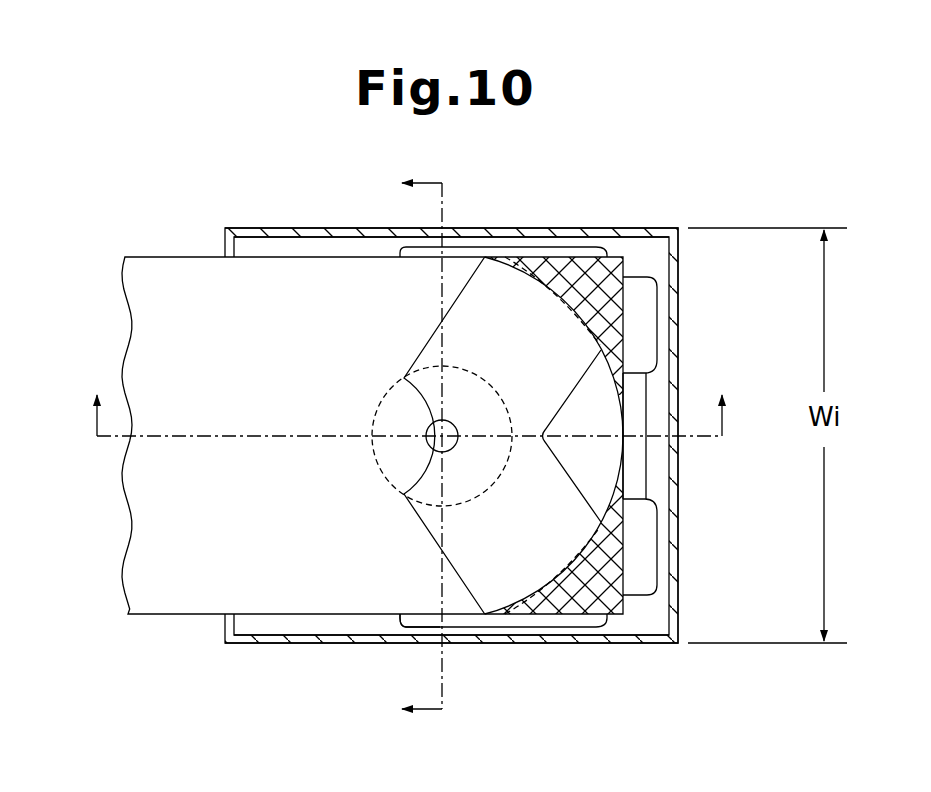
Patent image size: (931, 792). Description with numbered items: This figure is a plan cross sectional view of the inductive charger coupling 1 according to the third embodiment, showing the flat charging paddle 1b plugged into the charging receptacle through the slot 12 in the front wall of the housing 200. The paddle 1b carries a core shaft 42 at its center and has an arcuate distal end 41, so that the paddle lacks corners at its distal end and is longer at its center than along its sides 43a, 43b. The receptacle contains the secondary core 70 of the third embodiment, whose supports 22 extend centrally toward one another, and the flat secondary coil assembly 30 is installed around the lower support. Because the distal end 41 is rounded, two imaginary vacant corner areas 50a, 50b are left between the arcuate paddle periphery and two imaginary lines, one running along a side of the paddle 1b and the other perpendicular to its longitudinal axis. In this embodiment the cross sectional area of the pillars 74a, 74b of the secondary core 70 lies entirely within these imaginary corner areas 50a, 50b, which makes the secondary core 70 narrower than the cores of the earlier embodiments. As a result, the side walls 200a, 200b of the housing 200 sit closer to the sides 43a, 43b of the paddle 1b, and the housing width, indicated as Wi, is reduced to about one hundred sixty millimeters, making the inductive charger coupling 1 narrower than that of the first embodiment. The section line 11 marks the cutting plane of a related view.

The inductive charger coupling 1 is at (668, 210).
The charging paddle 1b is at (176, 252).
The section line 11- 11 is at (411, 416).
The slot 12 is at (426, 446).
The support 22 is at (430, 500).
The flat secondary coil assembly 30 is at (395, 620).
The distal end 41 is at (643, 377).
The core shaft 42 is at (418, 470).
The side of the paddle 43a is at (440, 252).
The side of the paddle 43b is at (443, 617).
The imaginary corner area 50a is at (617, 292).
The imaginary corner area 50b is at (620, 532).
The secondary core 70 is at (405, 350).
The pillar 74a is at (583, 277).
The pillar 74b is at (579, 608).
The housing 200 is at (672, 261).
The side wall 200a is at (527, 240).
The side wall 200b is at (505, 633).